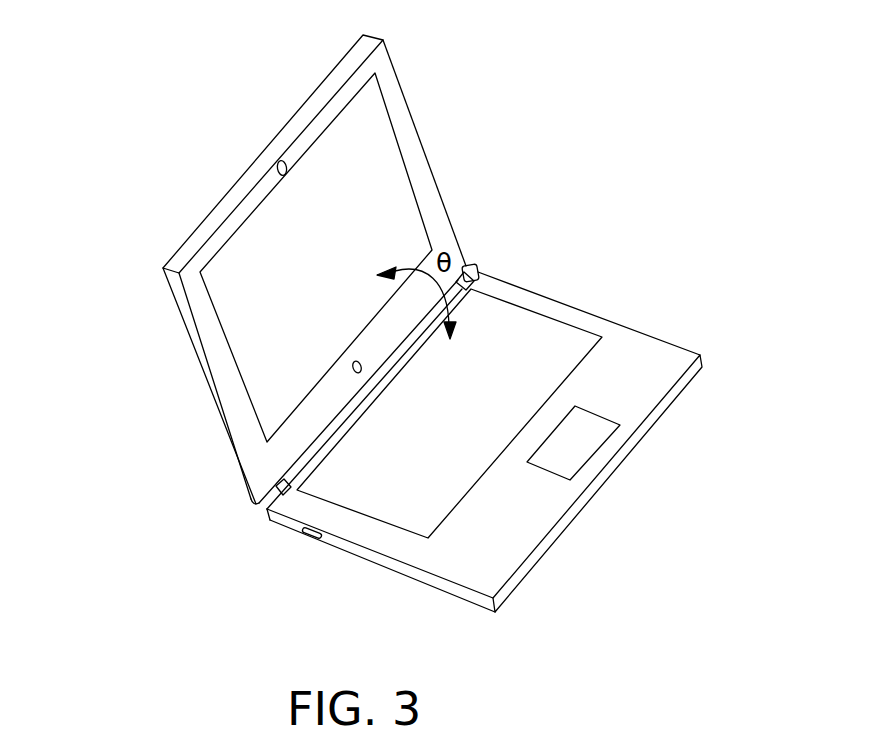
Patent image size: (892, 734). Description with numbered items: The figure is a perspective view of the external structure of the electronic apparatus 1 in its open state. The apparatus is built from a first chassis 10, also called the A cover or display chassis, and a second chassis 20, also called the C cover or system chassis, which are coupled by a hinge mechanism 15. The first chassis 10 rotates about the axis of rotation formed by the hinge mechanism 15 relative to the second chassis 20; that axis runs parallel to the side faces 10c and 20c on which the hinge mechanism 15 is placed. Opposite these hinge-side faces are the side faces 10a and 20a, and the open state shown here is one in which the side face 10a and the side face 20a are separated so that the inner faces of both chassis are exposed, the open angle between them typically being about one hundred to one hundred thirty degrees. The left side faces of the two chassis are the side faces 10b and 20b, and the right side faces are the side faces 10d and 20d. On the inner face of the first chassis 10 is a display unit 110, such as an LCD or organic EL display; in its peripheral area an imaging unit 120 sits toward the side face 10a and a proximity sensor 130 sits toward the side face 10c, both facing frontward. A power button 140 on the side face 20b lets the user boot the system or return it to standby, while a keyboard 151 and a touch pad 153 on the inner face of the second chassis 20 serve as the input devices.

The electronic apparatus 1 is at (98, 90).
The first chassis 10 is at (157, 430).
The side face 10a is at (213, 212).
The side face 10b is at (193, 352).
The side face 10c is at (476, 267).
The side face 10d is at (411, 112).
The hinge mechanism 15 is at (286, 467).
The second chassis 20 is at (577, 560).
The side face 20a is at (687, 378).
The side face 20b is at (422, 578).
The side face 20c is at (268, 518).
The side face 20d is at (668, 342).
The display unit 110 is at (410, 215).
The imaging unit 120 is at (283, 164).
The proximity sensor 130 is at (358, 370).
The power button 140 is at (308, 542).
The keyboard 151 is at (548, 347).
The touch pad 153 is at (590, 446).